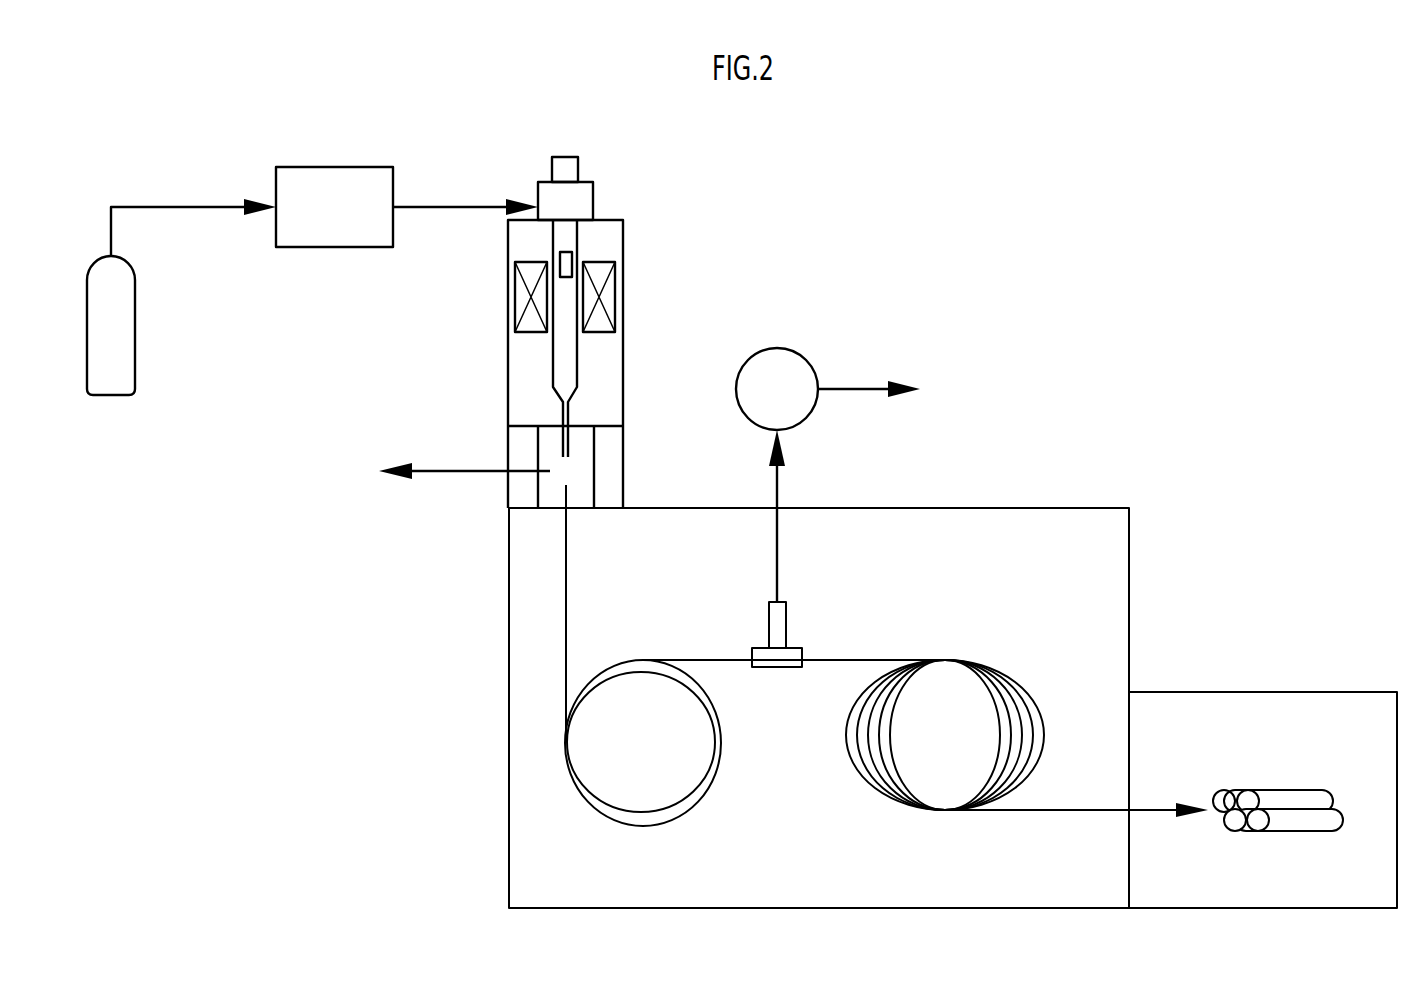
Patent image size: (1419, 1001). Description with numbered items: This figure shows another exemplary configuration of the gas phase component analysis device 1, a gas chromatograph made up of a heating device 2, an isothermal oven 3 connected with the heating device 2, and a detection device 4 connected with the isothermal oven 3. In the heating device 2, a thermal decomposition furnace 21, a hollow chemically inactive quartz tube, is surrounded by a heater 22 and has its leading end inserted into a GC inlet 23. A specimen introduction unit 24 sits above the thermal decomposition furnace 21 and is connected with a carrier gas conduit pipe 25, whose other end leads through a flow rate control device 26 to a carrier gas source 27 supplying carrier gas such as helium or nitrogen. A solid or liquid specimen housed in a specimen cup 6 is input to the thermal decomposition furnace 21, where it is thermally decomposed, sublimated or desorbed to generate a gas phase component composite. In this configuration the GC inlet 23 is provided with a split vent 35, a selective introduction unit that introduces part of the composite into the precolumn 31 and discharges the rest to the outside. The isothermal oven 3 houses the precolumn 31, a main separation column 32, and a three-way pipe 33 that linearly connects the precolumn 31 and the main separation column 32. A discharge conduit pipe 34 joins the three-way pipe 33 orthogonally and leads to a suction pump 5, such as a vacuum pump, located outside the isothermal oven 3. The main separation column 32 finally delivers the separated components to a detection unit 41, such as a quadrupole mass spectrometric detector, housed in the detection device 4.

The gas phase component analysis device 1 is at (948, 228).
The heating device 2 is at (660, 208).
The isothermal oven 3 is at (1078, 478).
The detection device 4 is at (1330, 670).
The suction pump 5 is at (782, 348).
The specimen cup 6 is at (574, 265).
The thermal decomposition furnace 21 is at (579, 373).
The heater 22 is at (617, 297).
The GC inlet 23 is at (597, 462).
The specimen introduction unit 24 is at (596, 205).
The carrier gas conduit pipe 25 is at (462, 207).
The flow rate control device 26 is at (338, 167).
The carrier gas source 27 is at (136, 310).
The precolumn 31 is at (640, 828).
The main separation column 32 is at (853, 786).
The three-way pipe 33 is at (774, 670).
The discharge conduit pipe 34 is at (778, 566).
The split vent 35 is at (460, 473).
The detection unit 41 is at (1280, 790).